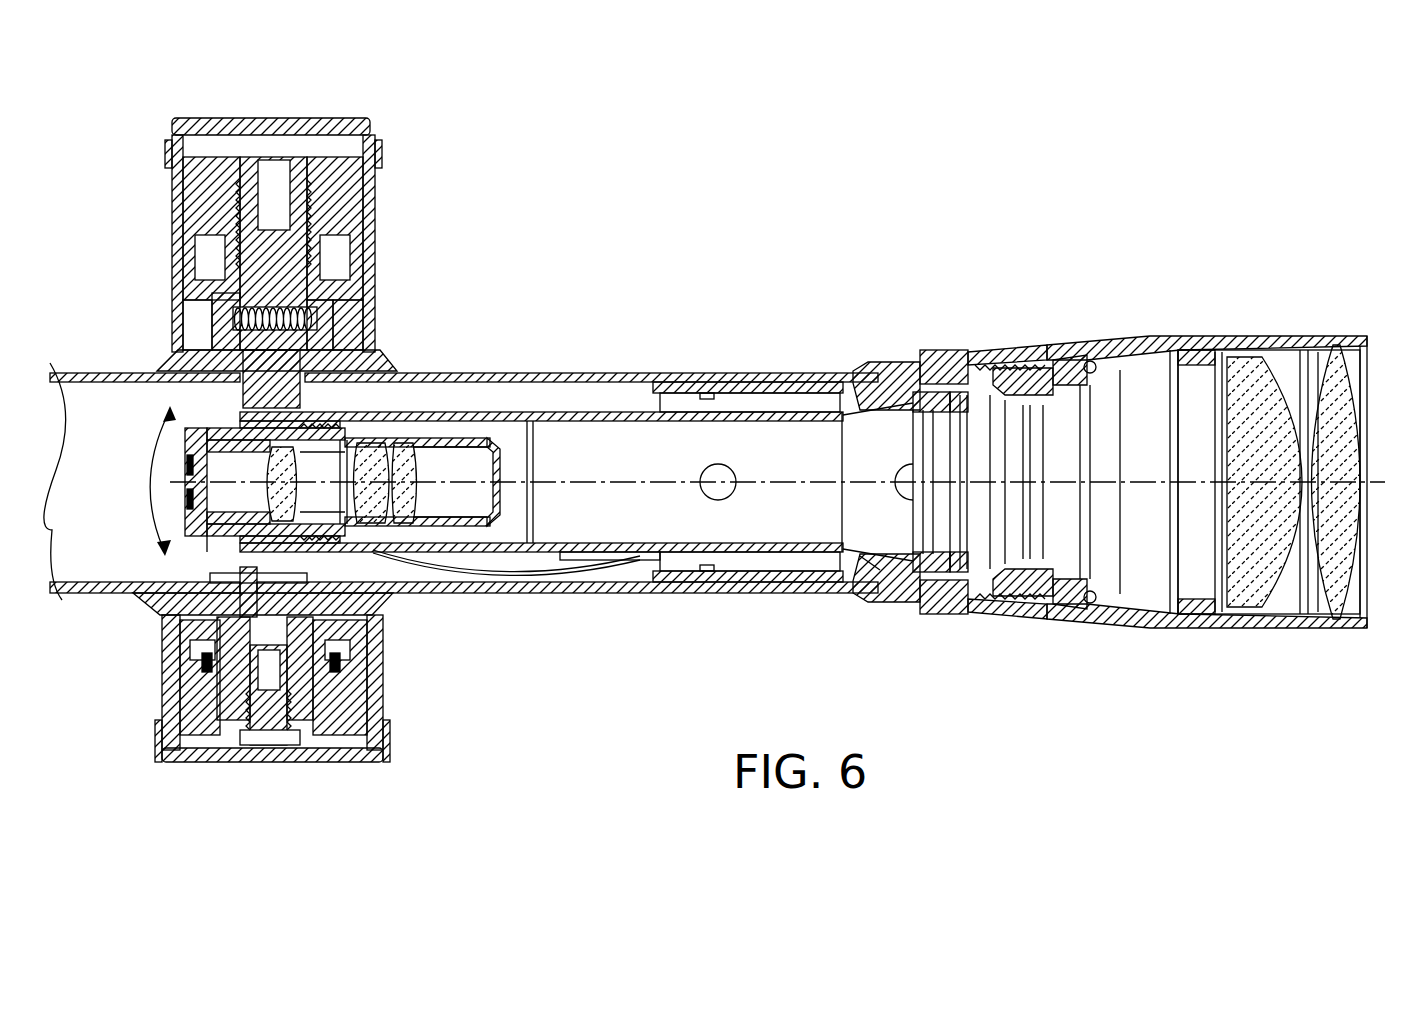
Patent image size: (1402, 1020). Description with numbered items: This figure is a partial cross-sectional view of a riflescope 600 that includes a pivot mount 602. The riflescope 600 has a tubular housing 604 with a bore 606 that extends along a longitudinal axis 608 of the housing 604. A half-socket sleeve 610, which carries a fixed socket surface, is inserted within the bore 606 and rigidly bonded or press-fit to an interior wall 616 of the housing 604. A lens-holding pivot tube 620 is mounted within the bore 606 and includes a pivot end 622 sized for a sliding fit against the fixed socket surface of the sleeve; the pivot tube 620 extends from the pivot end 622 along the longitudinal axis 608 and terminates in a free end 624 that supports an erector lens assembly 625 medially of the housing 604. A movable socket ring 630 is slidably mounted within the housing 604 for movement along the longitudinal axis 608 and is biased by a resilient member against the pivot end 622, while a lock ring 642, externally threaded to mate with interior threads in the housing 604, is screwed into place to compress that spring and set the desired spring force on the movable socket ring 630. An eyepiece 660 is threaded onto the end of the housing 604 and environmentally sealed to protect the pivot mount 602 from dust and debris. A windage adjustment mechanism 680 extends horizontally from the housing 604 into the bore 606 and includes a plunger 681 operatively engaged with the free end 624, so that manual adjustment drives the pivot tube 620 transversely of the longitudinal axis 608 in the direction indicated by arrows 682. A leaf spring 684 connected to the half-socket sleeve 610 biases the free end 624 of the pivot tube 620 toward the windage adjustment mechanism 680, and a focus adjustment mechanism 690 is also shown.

The riflescope 600 is at (803, 203).
The pivot mount 602 is at (901, 336).
The tubular housing 604 is at (538, 372).
The bore 606 is at (488, 395).
The longitudinal axis 608 is at (565, 478).
The half-socket sleeve 610 is at (808, 386).
The interior wall 616 is at (600, 575).
The pivot tube 620 is at (607, 408).
The pivot end 622 is at (888, 575).
The free end 624 is at (200, 554).
The erector lens assembly 625 is at (360, 453).
The movable socket ring 630 is at (1007, 580).
The lock ring 642 is at (1053, 582).
The eyepiece 660 is at (1252, 373).
The windage adjustment mechanism 680 is at (376, 242).
The plunger 681 is at (248, 392).
The arrows 682 is at (150, 488).
The leaf spring 684 is at (493, 573).
The focus adjustment mechanism 690 is at (387, 727).